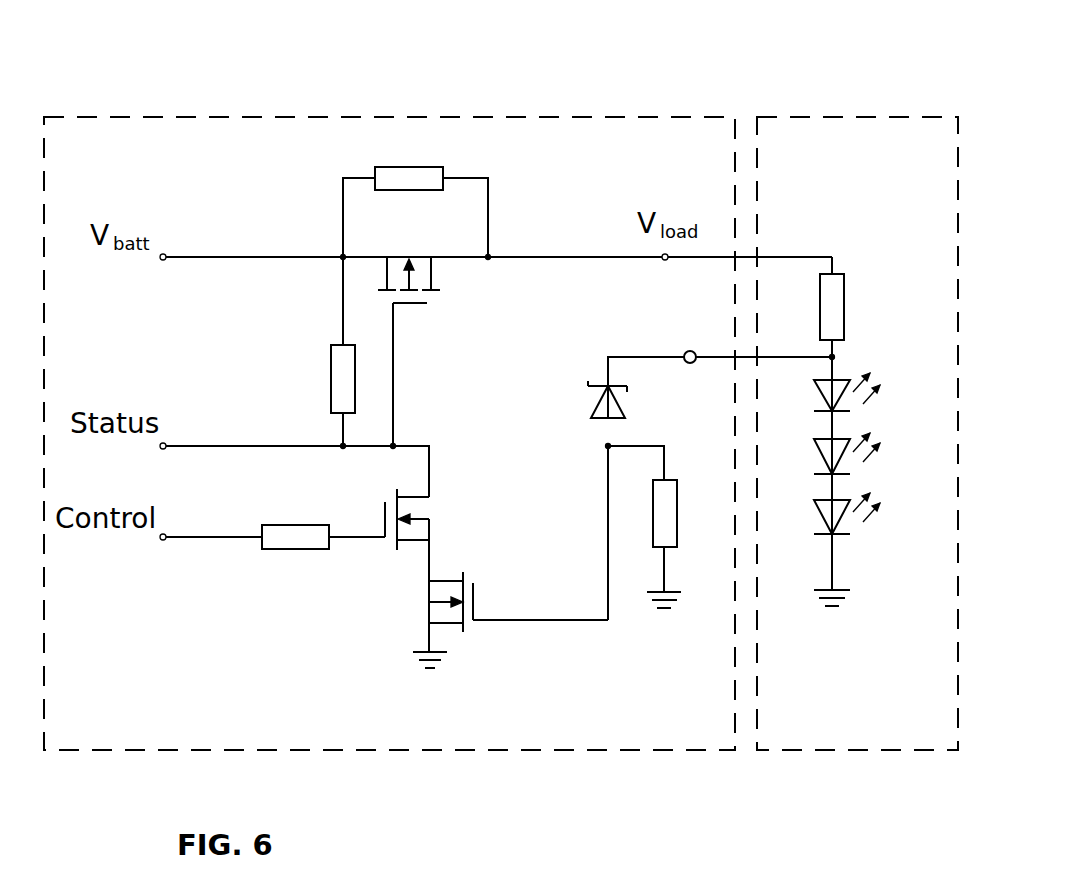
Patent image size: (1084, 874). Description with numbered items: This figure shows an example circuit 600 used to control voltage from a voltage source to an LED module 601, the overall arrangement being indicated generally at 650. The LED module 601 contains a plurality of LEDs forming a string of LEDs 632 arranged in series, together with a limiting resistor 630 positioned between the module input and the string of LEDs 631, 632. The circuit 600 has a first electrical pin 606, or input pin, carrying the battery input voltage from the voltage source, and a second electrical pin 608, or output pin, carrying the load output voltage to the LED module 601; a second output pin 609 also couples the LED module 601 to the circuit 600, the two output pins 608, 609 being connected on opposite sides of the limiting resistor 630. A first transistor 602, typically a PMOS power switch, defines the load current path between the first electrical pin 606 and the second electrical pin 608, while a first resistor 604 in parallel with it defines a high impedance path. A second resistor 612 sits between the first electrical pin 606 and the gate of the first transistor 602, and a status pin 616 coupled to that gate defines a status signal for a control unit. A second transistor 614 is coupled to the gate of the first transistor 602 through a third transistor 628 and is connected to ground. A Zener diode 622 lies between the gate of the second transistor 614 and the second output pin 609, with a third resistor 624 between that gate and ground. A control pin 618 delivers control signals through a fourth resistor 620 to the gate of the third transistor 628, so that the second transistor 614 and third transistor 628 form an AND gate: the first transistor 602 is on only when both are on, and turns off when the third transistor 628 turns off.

The circuit 600 is at (132, 117).
The LED module 601 is at (812, 117).
The first transistor 602 is at (405, 304).
The first resistor 604 is at (425, 167).
The first electrical pin 606 is at (160, 258).
The second electrical pin 608 is at (668, 260).
The second output pin 609 is at (684, 351).
The second resistor 612 is at (330, 386).
The second transistor 614 is at (477, 600).
The status pin 616 is at (158, 448).
The control pin 618 is at (158, 539).
The fourth resistor 620 is at (290, 549).
The Zener diode 622 is at (623, 406).
The third resistor 624 is at (649, 525).
The third transistor 628 is at (385, 513).
The limiting resistor 630 is at (843, 280).
The string of LEDs 631 is at (835, 358).
The string of LEDs 632 is at (818, 515).
The circuit 650 is at (695, 65).